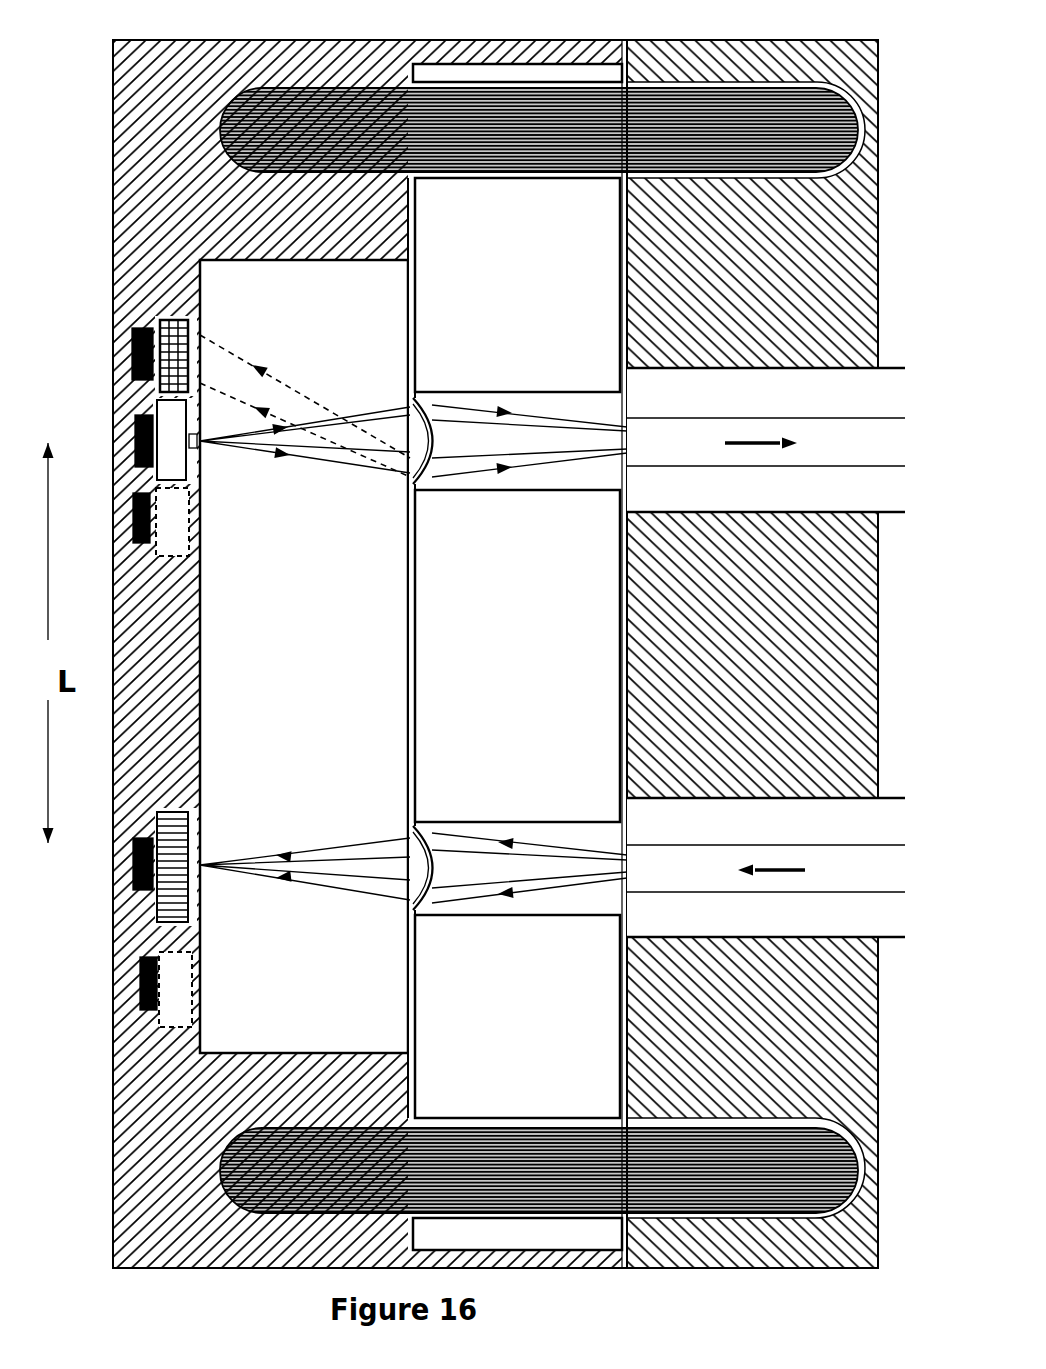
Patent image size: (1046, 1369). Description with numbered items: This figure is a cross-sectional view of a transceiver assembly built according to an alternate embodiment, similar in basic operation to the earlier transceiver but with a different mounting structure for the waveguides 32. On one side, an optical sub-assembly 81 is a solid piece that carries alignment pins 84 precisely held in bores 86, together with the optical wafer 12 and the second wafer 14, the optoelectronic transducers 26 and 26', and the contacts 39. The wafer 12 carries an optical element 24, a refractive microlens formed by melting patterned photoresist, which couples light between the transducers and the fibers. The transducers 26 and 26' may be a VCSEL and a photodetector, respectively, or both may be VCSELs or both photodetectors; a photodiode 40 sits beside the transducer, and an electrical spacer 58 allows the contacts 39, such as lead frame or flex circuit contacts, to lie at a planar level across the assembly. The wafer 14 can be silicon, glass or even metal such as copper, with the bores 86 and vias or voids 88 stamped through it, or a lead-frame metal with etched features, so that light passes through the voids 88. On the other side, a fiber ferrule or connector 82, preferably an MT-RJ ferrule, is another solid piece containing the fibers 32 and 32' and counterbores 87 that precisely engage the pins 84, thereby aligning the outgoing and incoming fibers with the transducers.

The optical wafer 12 is at (308, 303).
The optical wafer 14 is at (590, 305).
The optical element 24 is at (408, 403).
The optoelectronic transducer 26 is at (342, 407).
The optoelectronic transducer 26' is at (348, 857).
The optical waveguide 32 is at (772, 418).
The optical fiber 32' is at (775, 846).
The contacts 39 is at (135, 345).
The photodiode 40 is at (165, 335).
The electrical spacer 58 is at (157, 540).
The optical sub-assembly 81 is at (295, 50).
The fiber ferrule 82 is at (795, 55).
The alignment pins 84 is at (265, 125).
The bores 86 is at (510, 85).
The counterbores 87 is at (685, 80).
The vias or voids 88 is at (580, 400).